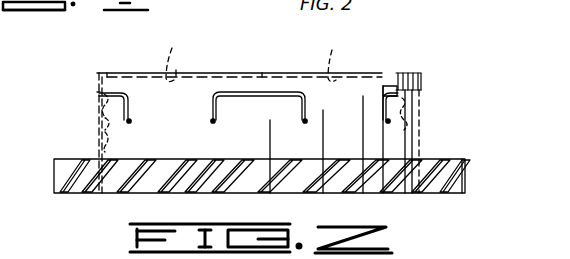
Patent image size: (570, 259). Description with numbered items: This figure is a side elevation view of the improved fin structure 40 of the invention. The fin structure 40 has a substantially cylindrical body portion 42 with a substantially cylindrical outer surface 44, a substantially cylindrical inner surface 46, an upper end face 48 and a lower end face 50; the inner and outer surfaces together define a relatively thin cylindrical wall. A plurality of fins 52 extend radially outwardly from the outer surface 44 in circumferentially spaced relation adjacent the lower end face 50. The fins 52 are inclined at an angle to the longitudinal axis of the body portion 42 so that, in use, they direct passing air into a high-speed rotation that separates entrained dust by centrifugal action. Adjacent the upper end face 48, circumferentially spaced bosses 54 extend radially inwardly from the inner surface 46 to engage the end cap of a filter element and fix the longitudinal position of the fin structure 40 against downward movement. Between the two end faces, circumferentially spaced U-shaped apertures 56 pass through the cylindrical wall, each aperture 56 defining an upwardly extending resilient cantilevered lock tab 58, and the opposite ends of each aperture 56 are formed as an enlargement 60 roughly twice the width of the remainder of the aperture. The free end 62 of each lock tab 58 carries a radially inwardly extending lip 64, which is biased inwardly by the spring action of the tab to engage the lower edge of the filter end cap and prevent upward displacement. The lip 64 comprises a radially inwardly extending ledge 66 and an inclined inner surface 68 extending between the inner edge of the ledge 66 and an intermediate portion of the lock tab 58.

The fin structure 40 is at (207, 80).
The body portion 42 is at (177, 76).
The outer surface 44 is at (115, 77).
The inner surface 46 is at (99, 153).
The upper end face 48 is at (263, 73).
The lower end face 50 is at (200, 194).
The fins 52 is at (135, 175).
The bosses 54 is at (249, 54).
The U-shaped apertures 56 is at (119, 94).
The lock tab 58 is at (118, 103).
The enlargement 60 is at (128, 123).
The free end 62 is at (97, 92).
The lip 64 is at (101, 108).
The ledge 66 is at (104, 94).
The inclined inner surface 68 is at (100, 132).